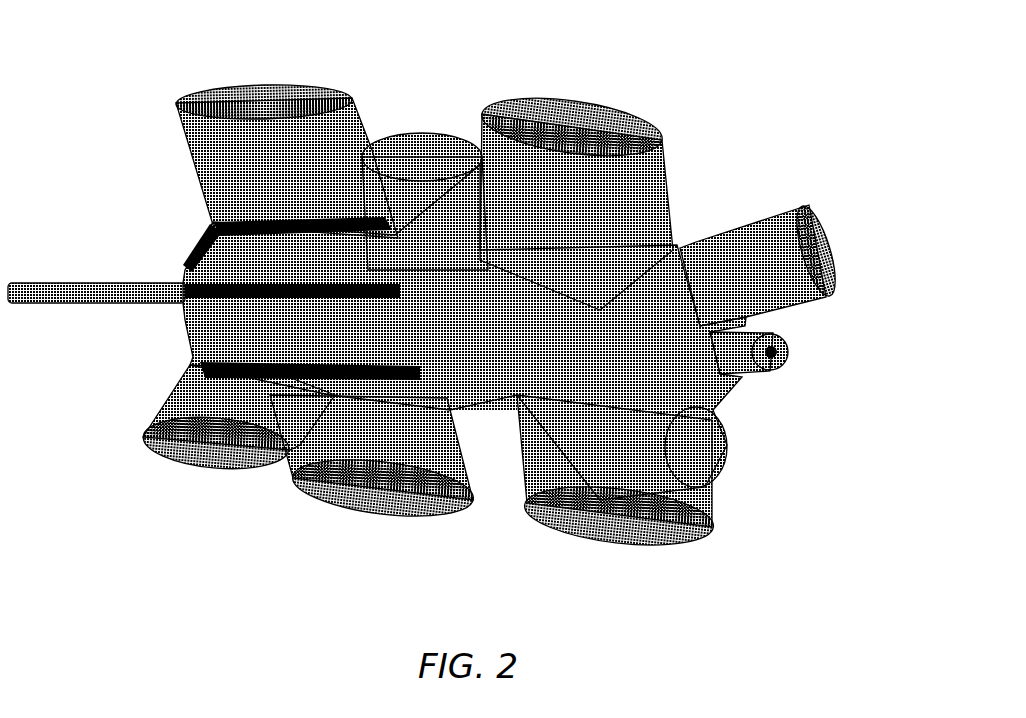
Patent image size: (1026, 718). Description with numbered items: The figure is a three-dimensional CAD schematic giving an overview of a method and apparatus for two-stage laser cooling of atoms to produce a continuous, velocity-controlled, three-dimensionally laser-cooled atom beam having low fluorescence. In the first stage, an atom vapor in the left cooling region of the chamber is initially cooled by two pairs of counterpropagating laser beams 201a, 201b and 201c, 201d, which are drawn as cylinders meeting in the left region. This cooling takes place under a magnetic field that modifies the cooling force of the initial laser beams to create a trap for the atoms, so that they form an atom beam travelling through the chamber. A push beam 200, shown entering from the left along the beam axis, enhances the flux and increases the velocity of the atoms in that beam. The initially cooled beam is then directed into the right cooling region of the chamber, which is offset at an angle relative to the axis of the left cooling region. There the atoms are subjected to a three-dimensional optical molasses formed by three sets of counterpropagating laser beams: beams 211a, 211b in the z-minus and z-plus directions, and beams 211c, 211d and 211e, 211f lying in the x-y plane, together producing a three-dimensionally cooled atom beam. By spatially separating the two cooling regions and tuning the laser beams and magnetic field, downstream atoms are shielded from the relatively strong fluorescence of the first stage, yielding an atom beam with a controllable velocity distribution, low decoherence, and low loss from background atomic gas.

The push beam 200 is at (97, 276).
The counterpropagating laser beam 201a is at (252, 90).
The counterpropagating laser beam 201b is at (333, 512).
The counterpropagating laser beam 201c is at (402, 143).
The counterpropagating laser beam 201d is at (203, 467).
The counterpropagating laser beam 211a is at (617, 113).
The counterpropagating laser beam 211b is at (673, 540).
The counterpropagating laser beam 211c is at (828, 225).
The counterpropagating laser beam 211d is at (468, 402).
The counterpropagating laser beam 211e is at (558, 192).
The counterpropagating laser beam 211f is at (727, 457).